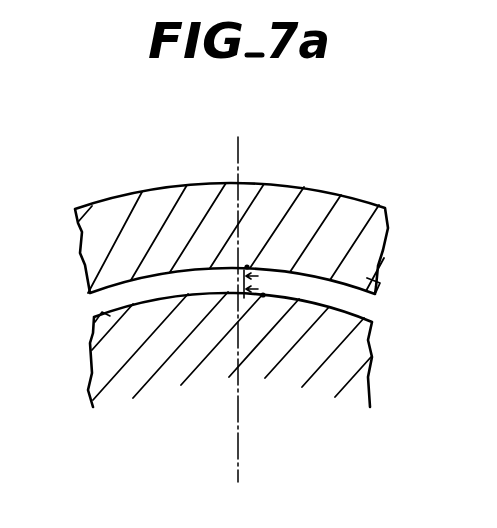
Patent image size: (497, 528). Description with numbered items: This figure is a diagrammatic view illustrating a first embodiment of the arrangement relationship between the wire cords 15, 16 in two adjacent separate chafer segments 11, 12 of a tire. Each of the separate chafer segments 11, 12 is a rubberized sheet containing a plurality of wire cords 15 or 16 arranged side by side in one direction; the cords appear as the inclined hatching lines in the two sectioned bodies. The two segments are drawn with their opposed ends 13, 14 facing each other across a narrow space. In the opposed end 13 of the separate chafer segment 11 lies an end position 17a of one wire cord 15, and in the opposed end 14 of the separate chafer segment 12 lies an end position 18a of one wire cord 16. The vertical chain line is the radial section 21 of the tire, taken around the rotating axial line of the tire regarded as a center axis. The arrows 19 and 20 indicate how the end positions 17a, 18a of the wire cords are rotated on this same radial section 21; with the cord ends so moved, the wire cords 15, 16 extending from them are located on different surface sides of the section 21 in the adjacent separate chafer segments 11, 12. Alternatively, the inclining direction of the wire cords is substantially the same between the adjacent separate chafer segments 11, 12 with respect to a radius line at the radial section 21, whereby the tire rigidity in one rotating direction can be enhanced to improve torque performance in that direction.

The separate chafer segment 11 is at (313, 210).
The separate chafer segment 12 is at (331, 374).
The opposed end of chafer segment 13 is at (353, 293).
The opposed end of chafer segment 14 is at (122, 312).
The wire cord 15 is at (328, 220).
The wire cord 16 is at (344, 343).
The end position of wire cord 17a is at (247, 267).
The end position of wire cord 18a is at (263, 296).
The arrow 19 is at (242, 267).
The arrow 20 is at (222, 356).
The radial section of the tire 21 is at (236, 463).